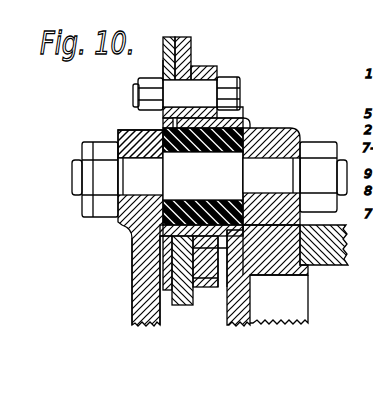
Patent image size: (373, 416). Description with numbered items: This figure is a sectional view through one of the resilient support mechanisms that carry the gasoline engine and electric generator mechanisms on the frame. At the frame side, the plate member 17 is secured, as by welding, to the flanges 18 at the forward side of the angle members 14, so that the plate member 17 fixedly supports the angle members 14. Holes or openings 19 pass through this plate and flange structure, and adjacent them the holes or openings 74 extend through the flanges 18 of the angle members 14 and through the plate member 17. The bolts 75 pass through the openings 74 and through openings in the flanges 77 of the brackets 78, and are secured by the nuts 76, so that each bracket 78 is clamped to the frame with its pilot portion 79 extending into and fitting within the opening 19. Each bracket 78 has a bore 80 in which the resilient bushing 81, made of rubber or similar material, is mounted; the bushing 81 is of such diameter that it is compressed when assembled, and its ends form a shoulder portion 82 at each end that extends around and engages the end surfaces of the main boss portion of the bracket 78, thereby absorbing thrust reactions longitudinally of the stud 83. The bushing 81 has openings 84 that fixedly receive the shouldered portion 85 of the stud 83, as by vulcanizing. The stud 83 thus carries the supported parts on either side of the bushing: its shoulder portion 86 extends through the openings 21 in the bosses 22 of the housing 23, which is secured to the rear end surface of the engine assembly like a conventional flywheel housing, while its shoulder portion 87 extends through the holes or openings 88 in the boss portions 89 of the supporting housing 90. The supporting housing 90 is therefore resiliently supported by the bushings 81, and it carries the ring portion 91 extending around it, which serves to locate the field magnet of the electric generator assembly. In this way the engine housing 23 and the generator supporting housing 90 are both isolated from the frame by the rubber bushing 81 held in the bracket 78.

The angle members 14 is at (191, 42).
The plate member 17 is at (167, 37).
The flanges 18 is at (185, 37).
The holes or openings 19 is at (185, 188).
The holes or openings 21 is at (118, 130).
The bosses 22 is at (123, 130).
The housing 23 is at (132, 243).
The holes or openings 74 is at (165, 70).
The bolts 75 is at (205, 72).
The nuts 76 is at (148, 78).
The flanges 77 is at (200, 88).
The brackets 78 is at (225, 120).
The pilot portion 79 is at (173, 122).
The bore 80 is at (247, 118).
The resilient bushing 81 is at (250, 124).
The shoulder portion 82 is at (133, 263).
The stud 83 is at (341, 142).
The openings 84 is at (167, 154).
The shouldered portion 85 is at (224, 209).
The shoulder portion 86 is at (118, 220).
The shoulder portion 87 is at (298, 128).
The holes or openings 88 is at (300, 216).
The boss portions 89 is at (275, 165).
The supporting housing 90 is at (250, 325).
The ring portion 91 is at (272, 275).